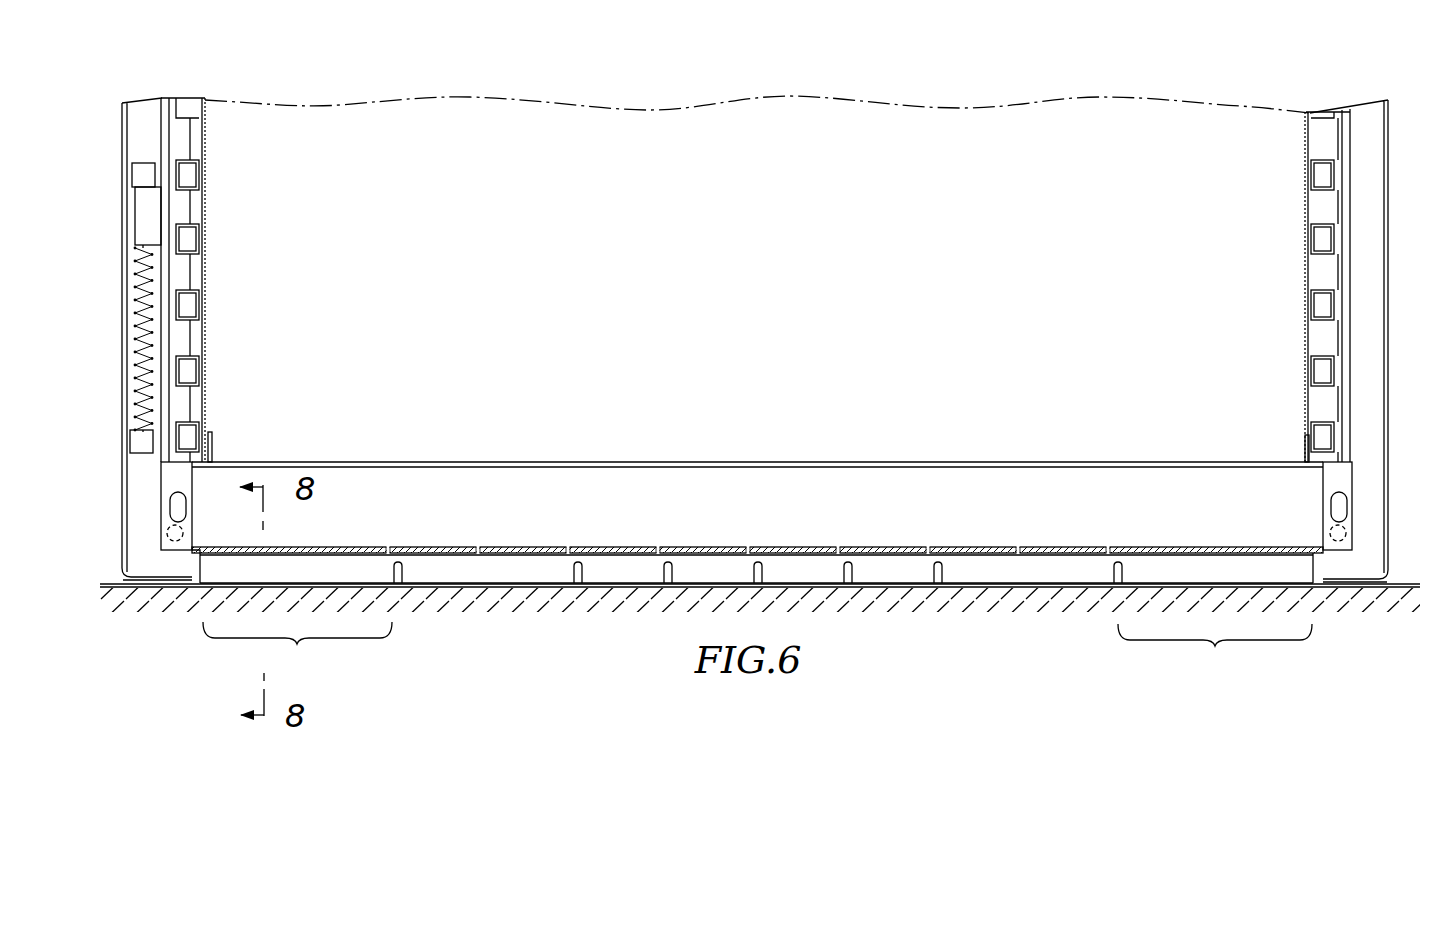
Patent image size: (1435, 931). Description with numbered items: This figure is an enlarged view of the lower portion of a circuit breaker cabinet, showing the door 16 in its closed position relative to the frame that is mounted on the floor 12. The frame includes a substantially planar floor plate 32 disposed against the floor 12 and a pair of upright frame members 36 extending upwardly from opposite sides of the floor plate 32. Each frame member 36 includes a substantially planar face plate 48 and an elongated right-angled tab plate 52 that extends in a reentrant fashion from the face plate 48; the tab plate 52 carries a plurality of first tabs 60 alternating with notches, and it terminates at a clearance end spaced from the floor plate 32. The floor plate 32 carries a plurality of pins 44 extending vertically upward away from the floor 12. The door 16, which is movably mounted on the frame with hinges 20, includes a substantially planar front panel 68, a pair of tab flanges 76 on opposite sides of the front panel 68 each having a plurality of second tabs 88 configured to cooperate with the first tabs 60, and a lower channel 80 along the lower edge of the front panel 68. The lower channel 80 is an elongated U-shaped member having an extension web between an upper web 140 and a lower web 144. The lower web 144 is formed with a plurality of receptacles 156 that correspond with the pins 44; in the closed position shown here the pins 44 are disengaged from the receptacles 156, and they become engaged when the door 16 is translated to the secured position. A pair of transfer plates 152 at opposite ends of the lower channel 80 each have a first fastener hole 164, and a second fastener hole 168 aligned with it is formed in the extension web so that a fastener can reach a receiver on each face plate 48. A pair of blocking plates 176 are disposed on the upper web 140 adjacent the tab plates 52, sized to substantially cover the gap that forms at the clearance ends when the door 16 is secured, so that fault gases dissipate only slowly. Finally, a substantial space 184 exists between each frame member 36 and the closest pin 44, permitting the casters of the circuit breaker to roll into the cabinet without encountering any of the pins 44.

The floor 12 is at (1400, 582).
The door 16 is at (500, 560).
The hinge 20 is at (133, 215).
The floor plate 32 is at (960, 583).
The upright frame member 36 is at (124, 130).
The pin 44 is at (404, 569).
The face plate 48 is at (146, 124).
The tab plate 52 is at (207, 128).
The first tab 60 is at (187, 402).
The front panel 68 is at (465, 97).
The tab flange 76 is at (161, 108).
The lower channel 80 is at (565, 458).
The second tab 88 is at (196, 432).
The upper web 140 is at (806, 464).
The lower web 144 is at (882, 547).
The transfer plate 152 is at (194, 509).
The receptacle 156 is at (387, 547).
The first fastener hole 164 is at (184, 506).
The second fastener hole 168 is at (167, 528).
The blocking plate 176 is at (212, 448).
The space 184 is at (757, 650).